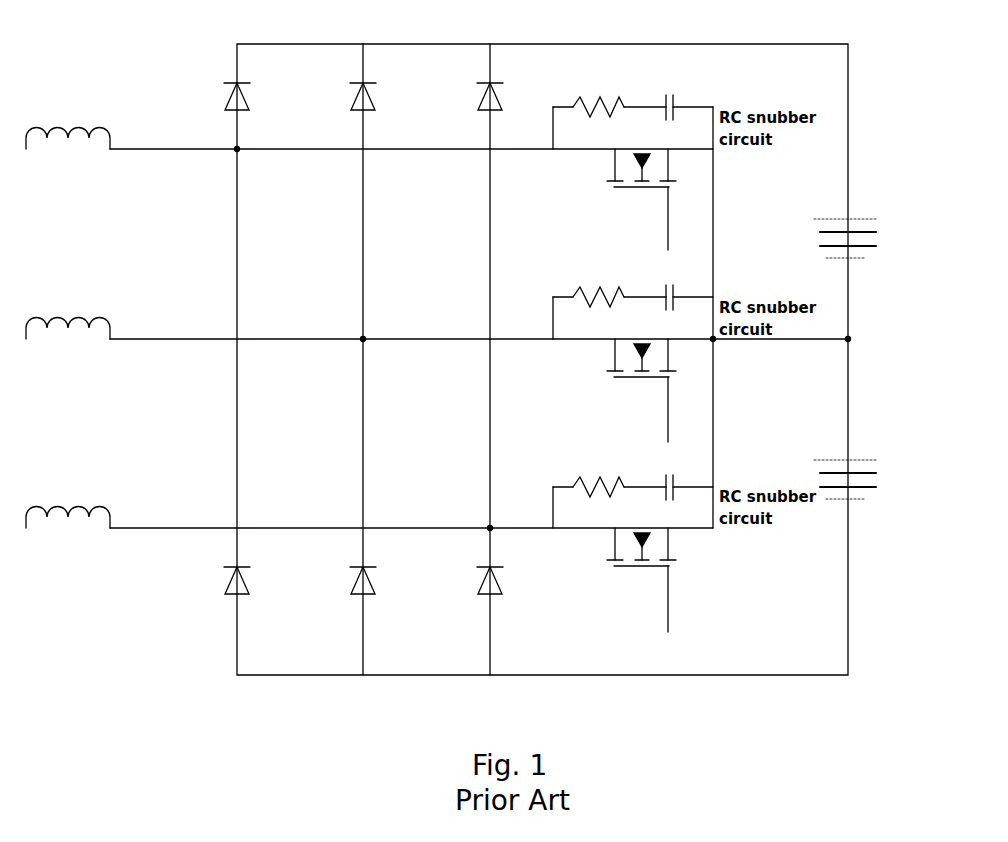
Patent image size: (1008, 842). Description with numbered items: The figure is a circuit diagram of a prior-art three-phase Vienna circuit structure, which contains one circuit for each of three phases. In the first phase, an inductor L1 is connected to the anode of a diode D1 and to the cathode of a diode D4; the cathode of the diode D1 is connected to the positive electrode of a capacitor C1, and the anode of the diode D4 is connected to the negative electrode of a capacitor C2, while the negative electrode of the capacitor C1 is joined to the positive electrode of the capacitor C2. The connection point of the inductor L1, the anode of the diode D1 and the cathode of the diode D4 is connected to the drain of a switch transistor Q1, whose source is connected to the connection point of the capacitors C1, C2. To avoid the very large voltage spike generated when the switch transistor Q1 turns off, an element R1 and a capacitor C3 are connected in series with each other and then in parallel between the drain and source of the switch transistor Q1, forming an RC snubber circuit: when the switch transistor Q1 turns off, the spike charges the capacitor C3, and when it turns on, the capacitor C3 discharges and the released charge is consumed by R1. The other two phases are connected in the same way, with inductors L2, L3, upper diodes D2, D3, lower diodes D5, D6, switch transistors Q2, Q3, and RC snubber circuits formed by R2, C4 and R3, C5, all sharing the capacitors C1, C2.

The inductor L1 is at (68, 127).
The inductor L2 is at (68, 317).
The inductor L3 is at (68, 506).
The diode D1 is at (250, 96).
The diode D2 is at (376, 96).
The diode D3 is at (503, 96).
The diode D4 is at (250, 580).
The diode D5 is at (376, 580).
The diode D6 is at (503, 580).
The inductor R1 is at (598, 117).
The inductor R2 is at (598, 307).
The inductor R3 is at (598, 496).
The capacitor C1 is at (857, 238).
The capacitor C2 is at (859, 479).
The capacitor C3 is at (665, 95).
The capacitor C4 is at (665, 285).
The capacitor C5 is at (665, 475).
The switch transistor Q1 is at (641, 199).
The switch transistor Q2 is at (641, 390).
The switch transistor Q3 is at (641, 580).